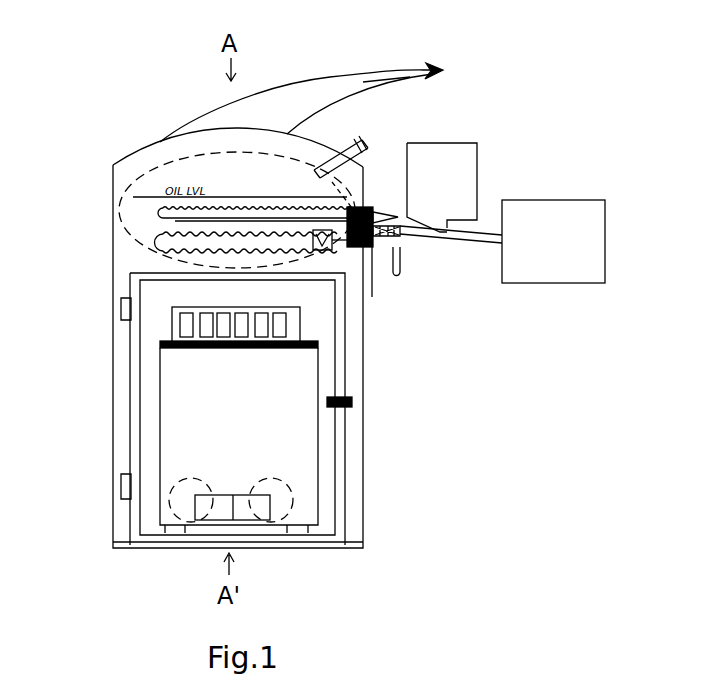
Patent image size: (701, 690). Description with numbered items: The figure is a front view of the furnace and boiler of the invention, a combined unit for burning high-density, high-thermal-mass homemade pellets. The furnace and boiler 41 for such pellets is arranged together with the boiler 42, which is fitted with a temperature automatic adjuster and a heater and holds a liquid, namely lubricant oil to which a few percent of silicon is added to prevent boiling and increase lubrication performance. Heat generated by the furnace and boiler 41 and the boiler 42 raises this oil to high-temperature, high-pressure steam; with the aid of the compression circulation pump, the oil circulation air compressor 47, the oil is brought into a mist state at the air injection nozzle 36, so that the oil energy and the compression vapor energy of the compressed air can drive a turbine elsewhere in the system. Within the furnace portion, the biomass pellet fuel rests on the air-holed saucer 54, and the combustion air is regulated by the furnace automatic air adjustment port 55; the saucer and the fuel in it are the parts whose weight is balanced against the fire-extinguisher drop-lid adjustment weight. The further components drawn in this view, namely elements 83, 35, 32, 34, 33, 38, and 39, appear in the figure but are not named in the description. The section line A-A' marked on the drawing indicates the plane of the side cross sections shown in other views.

The housing 83 is at (208, 113).
The boiler with the temperature automatic adjuster 42 is at (172, 170).
The air-holed saucer 54 is at (193, 330).
The furnace automatic air adjustment port 55 is at (225, 497).
The fuel tube 35 is at (190, 240).
The air injection nozzle 36 is at (215, 215).
The igniter 32 is at (356, 148).
The nozzle 34 is at (385, 220).
The fuel reservoir 33 is at (437, 167).
The oil circulation air compressor 47 is at (528, 212).
The drain 38 is at (475, 288).
The furnace and boiler for high-density and high-thermal-mass pellets 41 is at (293, 440).
The blower 39 is at (287, 497).